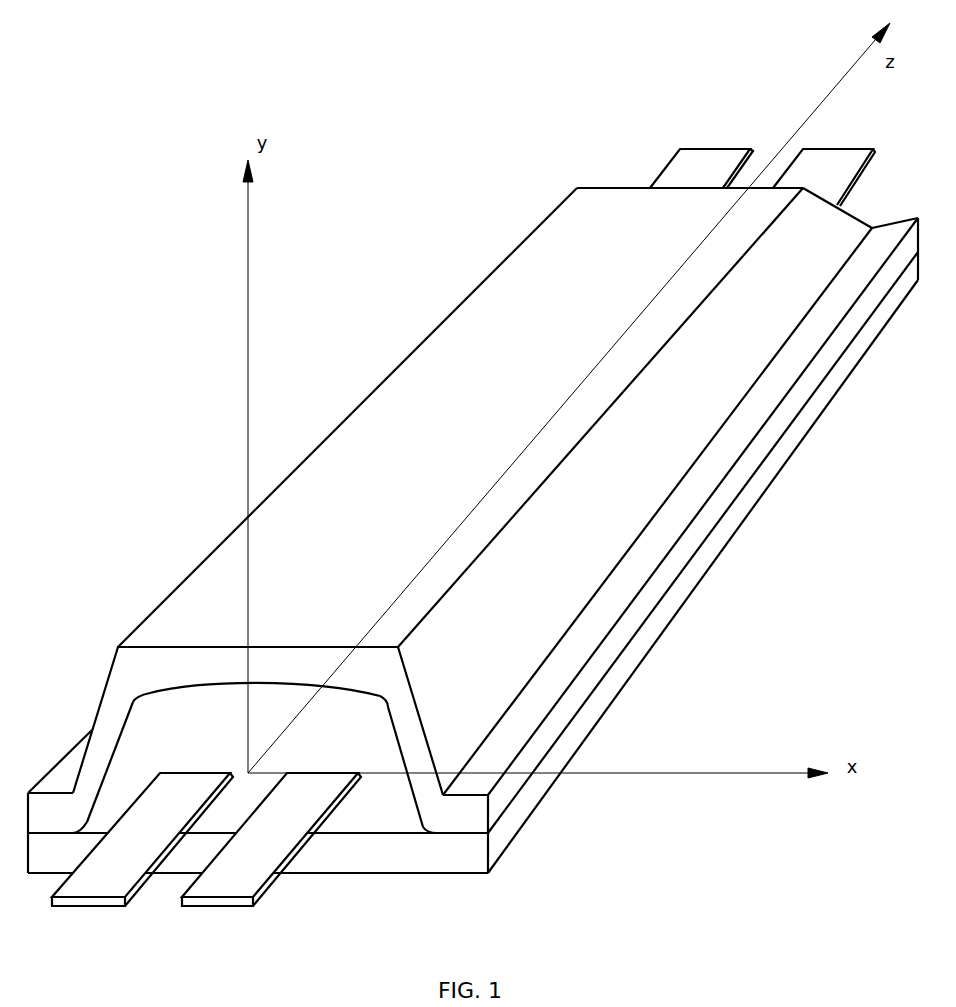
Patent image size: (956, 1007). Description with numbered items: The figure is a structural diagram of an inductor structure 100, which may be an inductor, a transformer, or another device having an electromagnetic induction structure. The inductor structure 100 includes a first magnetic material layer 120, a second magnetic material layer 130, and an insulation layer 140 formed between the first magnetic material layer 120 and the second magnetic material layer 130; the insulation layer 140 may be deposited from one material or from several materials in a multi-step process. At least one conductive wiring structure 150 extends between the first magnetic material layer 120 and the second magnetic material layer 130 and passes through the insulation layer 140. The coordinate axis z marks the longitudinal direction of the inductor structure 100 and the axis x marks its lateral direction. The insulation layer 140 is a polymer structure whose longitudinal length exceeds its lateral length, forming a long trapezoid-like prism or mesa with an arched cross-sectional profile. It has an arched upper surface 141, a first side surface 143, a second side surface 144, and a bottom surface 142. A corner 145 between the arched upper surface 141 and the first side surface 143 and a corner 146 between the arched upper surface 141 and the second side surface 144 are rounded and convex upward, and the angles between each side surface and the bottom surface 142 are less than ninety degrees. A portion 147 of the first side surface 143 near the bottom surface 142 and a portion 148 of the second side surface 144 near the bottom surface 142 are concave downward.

The inductor structure 100 is at (192, 314).
The first magnetic material layer 120 is at (473, 562).
The second magnetic material layer 130 is at (473, 527).
The insulation layer 140 is at (472, 491).
The arched upper surface 141 is at (255, 684).
The bottom surface 142 is at (343, 833).
The first side surface 143 is at (123, 748).
The second side surface 144 is at (403, 745).
The corner 145 is at (134, 702).
The corner 146 is at (382, 688).
The portion of the first side surface 147 is at (83, 828).
The portion of the second side surface 148 is at (437, 828).
The conductive wiring structure 150 is at (463, 527).